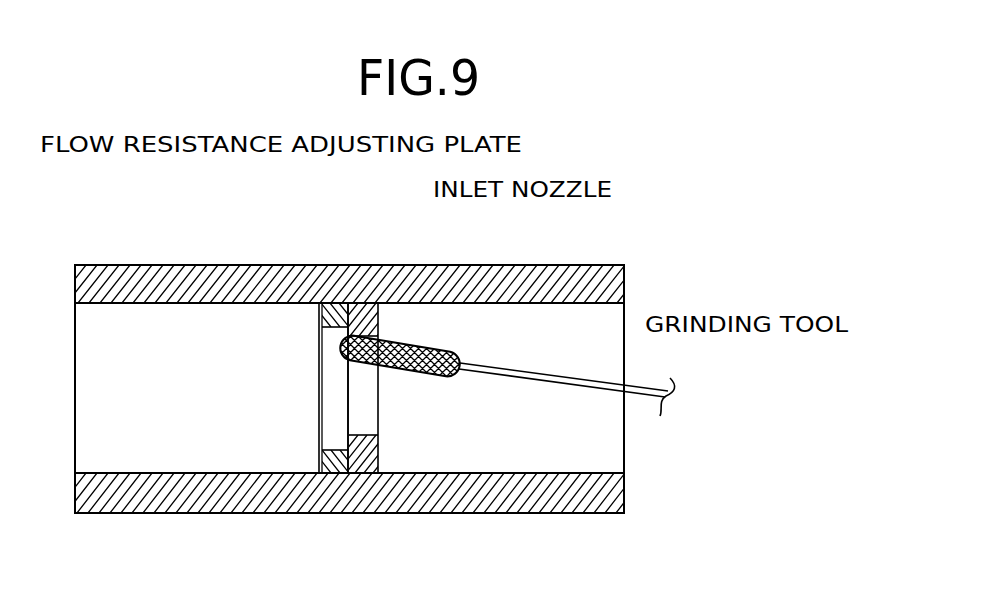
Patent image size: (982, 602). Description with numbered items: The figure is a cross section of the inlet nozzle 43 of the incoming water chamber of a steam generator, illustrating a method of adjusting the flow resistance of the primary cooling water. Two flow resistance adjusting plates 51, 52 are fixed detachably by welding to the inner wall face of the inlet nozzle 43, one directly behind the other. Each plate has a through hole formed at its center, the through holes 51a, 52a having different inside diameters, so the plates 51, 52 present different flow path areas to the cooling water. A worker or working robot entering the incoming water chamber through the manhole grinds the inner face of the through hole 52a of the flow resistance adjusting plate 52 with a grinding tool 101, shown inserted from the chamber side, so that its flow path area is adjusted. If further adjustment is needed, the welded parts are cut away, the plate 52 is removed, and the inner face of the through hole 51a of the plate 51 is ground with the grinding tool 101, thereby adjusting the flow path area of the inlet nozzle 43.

The inlet nozzle 43 is at (493, 268).
The flow resistance adjusting plate 51 is at (319, 366).
The flow resistance adjusting plate 52 is at (388, 386).
The through hole 51a is at (320, 448).
The through hole 52a is at (383, 431).
The grinding tool 101 is at (573, 379).